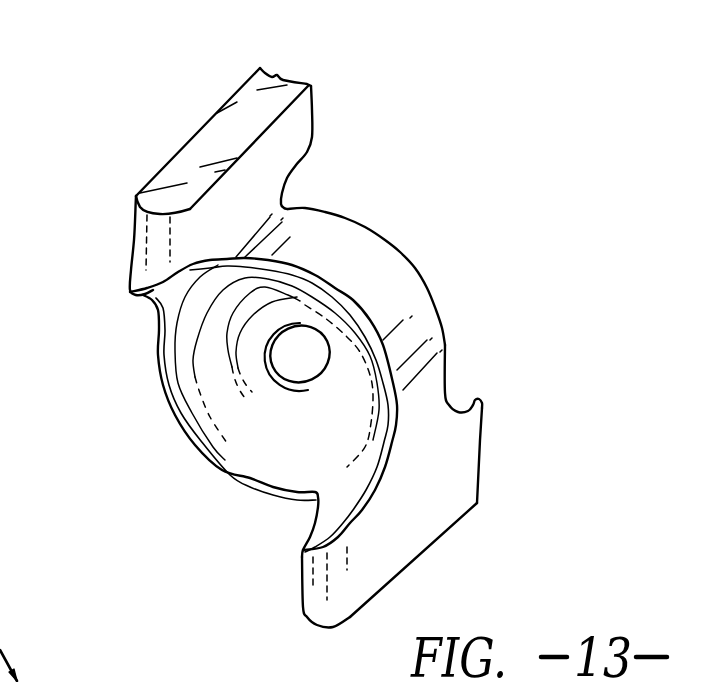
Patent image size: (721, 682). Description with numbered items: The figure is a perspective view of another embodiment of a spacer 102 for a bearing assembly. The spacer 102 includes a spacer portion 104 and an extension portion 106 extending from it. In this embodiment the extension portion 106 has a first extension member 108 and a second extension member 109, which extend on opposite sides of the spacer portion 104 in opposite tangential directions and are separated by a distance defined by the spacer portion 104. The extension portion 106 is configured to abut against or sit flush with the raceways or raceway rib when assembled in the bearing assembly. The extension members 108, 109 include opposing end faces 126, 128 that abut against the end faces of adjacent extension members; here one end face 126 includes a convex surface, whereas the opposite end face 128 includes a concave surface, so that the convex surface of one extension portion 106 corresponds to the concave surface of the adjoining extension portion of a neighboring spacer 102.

The spacer 102 is at (100, 88).
The spacer portion 104 is at (383, 230).
The extension portion 106 is at (161, 168).
The first extension member 108 is at (410, 530).
The second extension member 109 is at (234, 92).
The end face 126 is at (144, 233).
The end face 128 is at (281, 77).